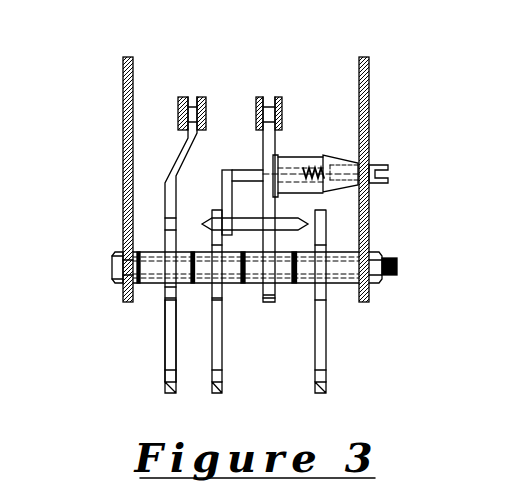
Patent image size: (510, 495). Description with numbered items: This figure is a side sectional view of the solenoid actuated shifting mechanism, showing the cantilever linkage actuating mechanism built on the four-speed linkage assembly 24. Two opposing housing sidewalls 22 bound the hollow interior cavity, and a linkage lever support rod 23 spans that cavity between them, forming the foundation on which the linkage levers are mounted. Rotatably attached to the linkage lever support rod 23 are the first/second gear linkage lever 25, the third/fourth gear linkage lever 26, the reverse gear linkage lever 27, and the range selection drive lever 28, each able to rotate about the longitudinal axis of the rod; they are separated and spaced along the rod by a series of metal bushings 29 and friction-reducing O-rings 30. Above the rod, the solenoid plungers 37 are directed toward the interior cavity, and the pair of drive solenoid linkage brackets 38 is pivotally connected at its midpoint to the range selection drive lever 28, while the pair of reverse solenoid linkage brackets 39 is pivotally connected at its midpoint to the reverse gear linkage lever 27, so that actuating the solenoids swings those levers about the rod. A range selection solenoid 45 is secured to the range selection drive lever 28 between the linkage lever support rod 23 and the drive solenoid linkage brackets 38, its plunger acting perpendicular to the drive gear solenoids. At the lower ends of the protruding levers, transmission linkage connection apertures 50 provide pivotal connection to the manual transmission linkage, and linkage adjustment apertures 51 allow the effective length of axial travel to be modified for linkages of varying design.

The housing sidewalls 22 is at (125, 102).
The linkage lever support rod 23 is at (397, 268).
The four-speed linkage assembly 24 is at (167, 185).
The first/second gear linkage lever 25 is at (327, 355).
The third/fourth gear linkage lever 26 is at (223, 357).
The reverse gear linkage lever 27 is at (165, 362).
The range selection drive lever 28 is at (268, 302).
The metal bushings 29 is at (155, 284).
The O-rings 30 is at (191, 284).
The solenoid plungers 37 is at (242, 168).
The drive solenoid linkage brackets 38 is at (280, 96).
The reverse solenoid linkage brackets 39 is at (203, 96).
The range selection solenoid 45 is at (312, 168).
The transmission linkage connection apertures 50 is at (210, 390).
The linkage adjustment apertures 51 is at (165, 300).